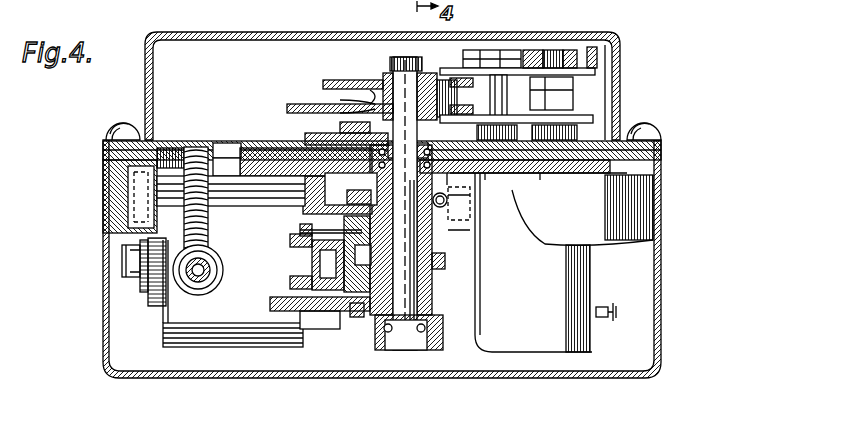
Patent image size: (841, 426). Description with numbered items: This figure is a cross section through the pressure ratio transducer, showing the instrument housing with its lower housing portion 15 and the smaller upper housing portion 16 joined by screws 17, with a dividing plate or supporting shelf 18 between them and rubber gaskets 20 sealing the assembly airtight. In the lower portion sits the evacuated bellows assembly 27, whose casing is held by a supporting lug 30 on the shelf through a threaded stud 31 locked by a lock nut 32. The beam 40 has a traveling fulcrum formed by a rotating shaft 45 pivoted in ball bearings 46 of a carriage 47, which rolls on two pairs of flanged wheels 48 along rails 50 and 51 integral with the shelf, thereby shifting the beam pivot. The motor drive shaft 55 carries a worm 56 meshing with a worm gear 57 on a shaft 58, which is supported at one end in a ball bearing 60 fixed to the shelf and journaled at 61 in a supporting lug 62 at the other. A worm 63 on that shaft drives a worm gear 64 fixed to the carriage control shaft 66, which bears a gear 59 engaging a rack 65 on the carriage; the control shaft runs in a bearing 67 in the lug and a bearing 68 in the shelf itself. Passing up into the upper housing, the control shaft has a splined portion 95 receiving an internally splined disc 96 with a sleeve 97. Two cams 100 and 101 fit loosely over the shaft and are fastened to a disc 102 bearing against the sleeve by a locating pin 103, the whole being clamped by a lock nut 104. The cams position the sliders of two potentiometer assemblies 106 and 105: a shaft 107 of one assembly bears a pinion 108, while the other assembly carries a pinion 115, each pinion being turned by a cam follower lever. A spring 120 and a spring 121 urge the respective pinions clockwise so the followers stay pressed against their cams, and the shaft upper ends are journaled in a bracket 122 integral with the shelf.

The lower housing portion 15 is at (661, 280).
The upper housing portion 16 is at (614, 72).
The screws 17 is at (118, 128).
The dividing plate or supporting shelf 18 is at (260, 150).
The rubber gaskets 20 is at (666, 164).
The evacuated bellows assembly 27 is at (245, 340).
The supporting lug 30 is at (153, 306).
The threaded stud 31 is at (122, 268).
The lock nut 32 is at (143, 292).
The beam 40 is at (300, 270).
The rotating shaft 45 is at (312, 256).
The ball bearings 46 is at (290, 240).
The carriage 47 is at (358, 317).
The flanged wheels 48 is at (300, 230).
The rail 50 is at (270, 304).
The rail 51 is at (330, 200).
The drive shaft 55 is at (210, 290).
The worm 56 is at (188, 294).
The worm gear 57 is at (200, 148).
The shaft 58 is at (278, 186).
The gear 59 is at (447, 263).
The ball bearing 60 is at (164, 150).
The journal 61 is at (462, 208).
The supporting lug 62 is at (477, 307).
The worm 63 is at (440, 224).
The worm gear 64 is at (470, 220).
The rack 65 is at (416, 283).
The carriage control shaft 66 is at (417, 305).
The bearing 67 is at (412, 350).
The bearing 68 is at (372, 142).
The splined portion 95 is at (455, 180).
The internally splined disc 96 is at (320, 140).
The sleeve 97 is at (368, 95).
The cam 100 is at (293, 104).
The cam 101 is at (335, 80).
The disc 102 is at (490, 175).
The locating pin 103 is at (446, 80).
The lock nut 104 is at (390, 62).
The potentiometer assembly 105 is at (583, 268).
The potentiometer assembly 106 is at (640, 200).
The shaft 107 is at (500, 50).
The pinion 108 is at (498, 70).
The pinion 115 is at (578, 105).
The spring 120 is at (540, 175).
The spring 121 is at (578, 135).
The bracket 122 is at (572, 52).